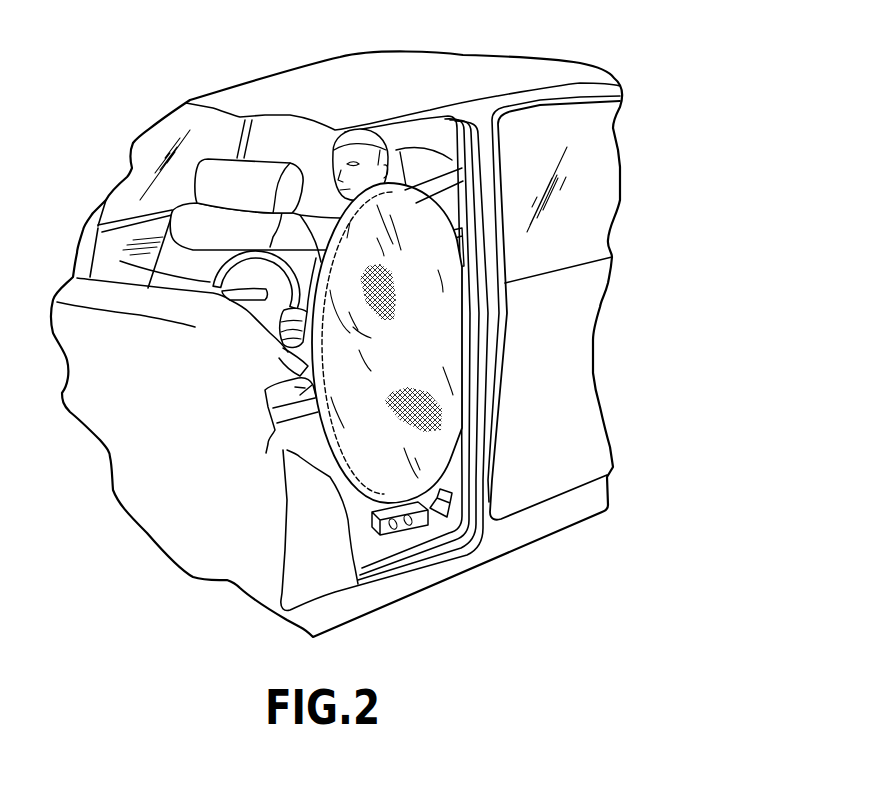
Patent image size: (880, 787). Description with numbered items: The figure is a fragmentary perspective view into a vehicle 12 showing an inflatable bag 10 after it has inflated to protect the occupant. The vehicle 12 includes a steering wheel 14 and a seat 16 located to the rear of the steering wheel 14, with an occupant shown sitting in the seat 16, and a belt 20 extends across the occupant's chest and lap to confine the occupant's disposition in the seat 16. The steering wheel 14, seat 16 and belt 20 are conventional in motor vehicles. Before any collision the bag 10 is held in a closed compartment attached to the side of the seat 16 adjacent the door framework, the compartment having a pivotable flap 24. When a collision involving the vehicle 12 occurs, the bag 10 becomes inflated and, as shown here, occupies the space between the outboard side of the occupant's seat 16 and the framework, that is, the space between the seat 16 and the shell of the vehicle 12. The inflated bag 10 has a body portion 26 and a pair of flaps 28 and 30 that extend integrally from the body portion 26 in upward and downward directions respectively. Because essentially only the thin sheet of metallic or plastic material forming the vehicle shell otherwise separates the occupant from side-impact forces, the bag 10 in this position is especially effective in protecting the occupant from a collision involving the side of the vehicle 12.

The inflatable bag 10 is at (294, 431).
The vehicle 12 is at (592, 35).
The steering wheel 14 is at (120, 261).
The seat 16 is at (387, 538).
The belt 20 is at (455, 172).
The flap 24 is at (467, 343).
The body portion 26 is at (430, 353).
The flap 28 is at (390, 200).
The flap 30 is at (467, 540).